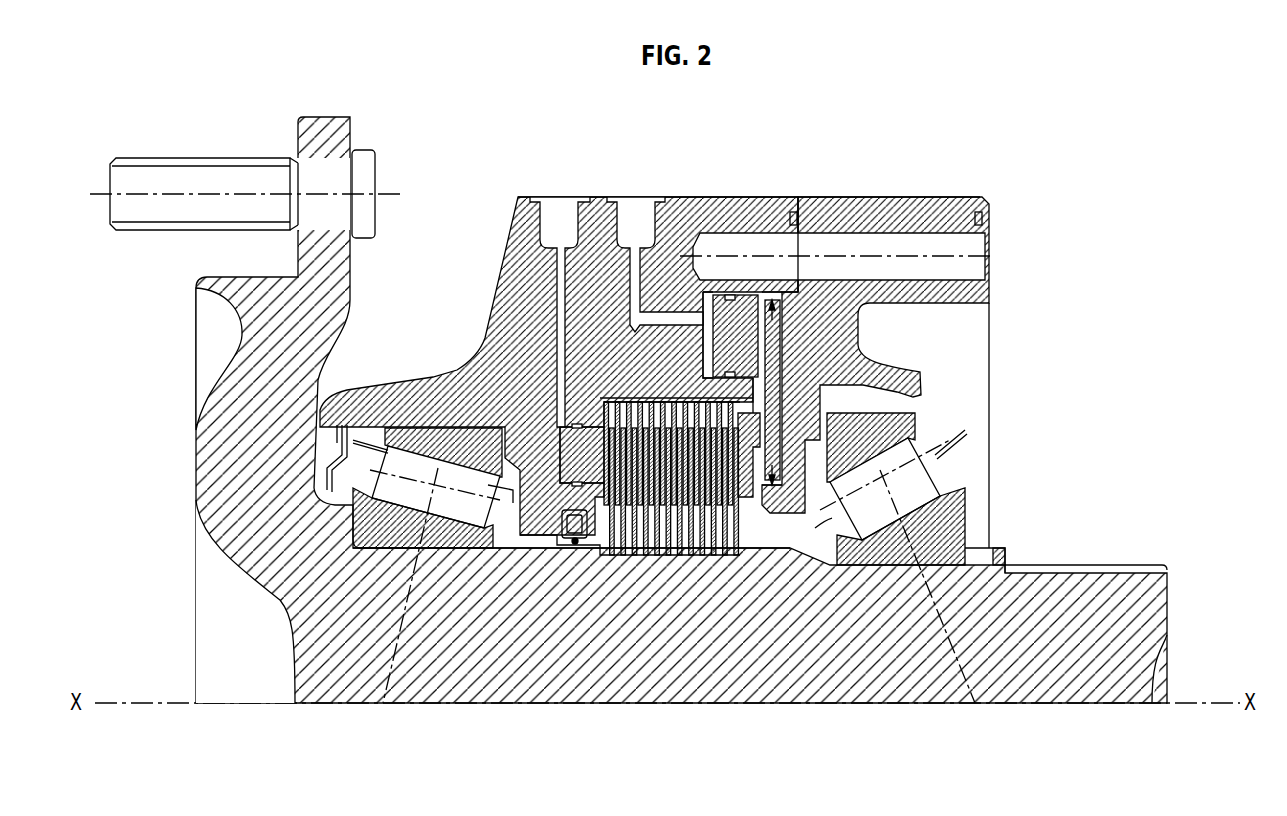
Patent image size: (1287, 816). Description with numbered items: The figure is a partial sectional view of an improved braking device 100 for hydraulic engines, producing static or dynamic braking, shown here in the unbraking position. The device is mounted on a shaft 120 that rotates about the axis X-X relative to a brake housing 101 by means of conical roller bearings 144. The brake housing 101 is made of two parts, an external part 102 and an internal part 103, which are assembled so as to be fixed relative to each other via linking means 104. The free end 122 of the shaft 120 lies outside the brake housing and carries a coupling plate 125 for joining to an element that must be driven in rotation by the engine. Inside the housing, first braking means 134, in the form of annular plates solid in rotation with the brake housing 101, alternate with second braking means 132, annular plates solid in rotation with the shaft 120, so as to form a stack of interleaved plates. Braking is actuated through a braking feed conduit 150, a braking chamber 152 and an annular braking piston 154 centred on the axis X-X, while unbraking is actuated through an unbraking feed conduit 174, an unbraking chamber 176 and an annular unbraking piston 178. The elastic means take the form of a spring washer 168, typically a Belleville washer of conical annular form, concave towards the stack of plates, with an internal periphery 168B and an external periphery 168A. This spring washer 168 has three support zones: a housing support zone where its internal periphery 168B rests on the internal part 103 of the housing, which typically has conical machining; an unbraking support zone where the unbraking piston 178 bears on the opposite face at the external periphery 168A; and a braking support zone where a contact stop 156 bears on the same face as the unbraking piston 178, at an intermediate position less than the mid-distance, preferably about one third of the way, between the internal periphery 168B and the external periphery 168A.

The improved braking device 100 is at (860, 150).
The brake housing 101 is at (775, 197).
The external part 102 is at (703, 208).
The internal part 103 is at (913, 296).
The linking means 104 is at (770, 247).
The shaft 120 is at (513, 640).
The free end 122 is at (196, 617).
The coupling plate 125 is at (328, 257).
The second braking means 132 is at (613, 533).
The first braking means 134 is at (757, 480).
The conical roller bearings 144 is at (410, 500).
The braking feed conduit 150 is at (560, 280).
The braking chamber 152 is at (558, 428).
The braking piston 154 is at (590, 437).
The contact stop 156 is at (770, 497).
The spring washer 168 is at (780, 353).
The external periphery 168A is at (780, 333).
The internal periphery 168B is at (780, 455).
The unbraking feed conduit 174 is at (632, 281).
The unbraking chamber 176 is at (700, 317).
The unbraking piston 178 is at (748, 355).